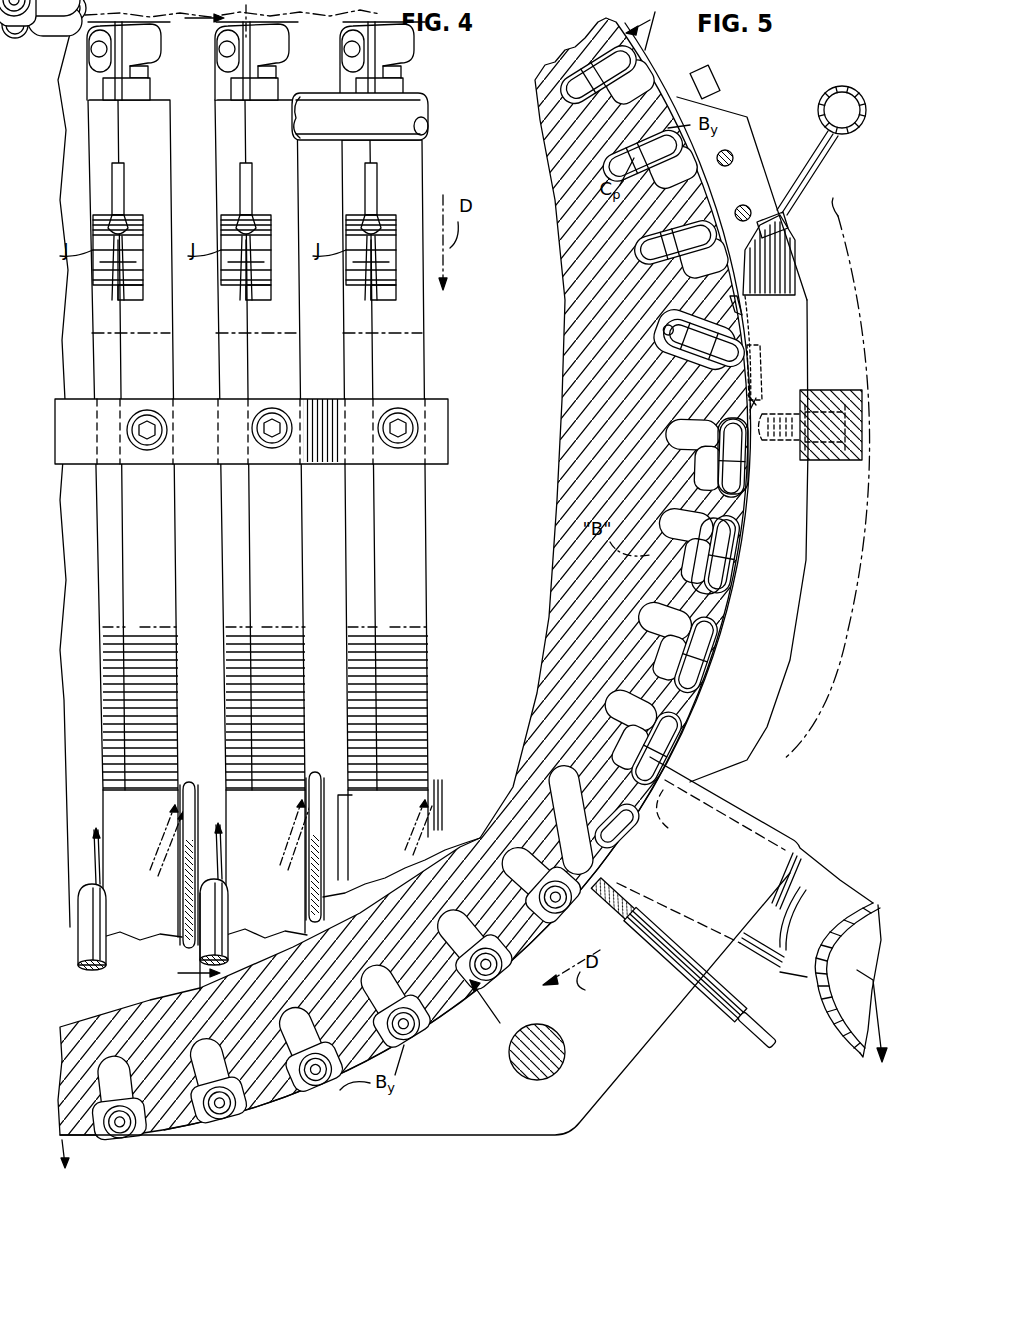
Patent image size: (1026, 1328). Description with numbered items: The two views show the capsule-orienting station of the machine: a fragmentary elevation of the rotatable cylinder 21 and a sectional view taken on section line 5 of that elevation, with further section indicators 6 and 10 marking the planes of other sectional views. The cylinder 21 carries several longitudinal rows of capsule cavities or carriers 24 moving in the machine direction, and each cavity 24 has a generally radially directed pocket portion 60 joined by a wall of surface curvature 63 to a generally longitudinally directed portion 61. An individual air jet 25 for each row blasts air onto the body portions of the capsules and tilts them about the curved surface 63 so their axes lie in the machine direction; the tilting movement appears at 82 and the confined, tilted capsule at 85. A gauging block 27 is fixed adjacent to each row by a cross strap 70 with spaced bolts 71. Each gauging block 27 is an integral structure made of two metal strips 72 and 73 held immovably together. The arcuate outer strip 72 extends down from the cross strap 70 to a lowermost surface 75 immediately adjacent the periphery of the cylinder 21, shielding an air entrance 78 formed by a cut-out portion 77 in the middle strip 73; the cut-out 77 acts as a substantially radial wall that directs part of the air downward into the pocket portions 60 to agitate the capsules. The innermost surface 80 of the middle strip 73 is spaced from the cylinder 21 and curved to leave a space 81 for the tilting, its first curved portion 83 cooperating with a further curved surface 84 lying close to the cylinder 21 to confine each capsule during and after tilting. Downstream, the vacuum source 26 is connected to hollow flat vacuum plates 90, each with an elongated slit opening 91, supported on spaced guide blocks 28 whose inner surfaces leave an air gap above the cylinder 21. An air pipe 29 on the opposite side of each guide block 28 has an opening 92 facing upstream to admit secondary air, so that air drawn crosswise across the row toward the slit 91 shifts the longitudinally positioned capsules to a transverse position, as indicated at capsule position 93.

In FIG. 4, the section line 5— 5 is at (212, 497).
In FIG. 5, the section line 6- 6 is at (565, 518).
In FIG. 4, the tube / section line 10 is at (300, 90).
In FIG. 4, the rotatable cylinder 21 is at (66, 118).
In FIG. 5, the rotatable cylinder 21 is at (575, 283).
In FIG. 4, the capsule cavity 24 is at (84, 40).
In FIG. 4, the air jet 25 is at (122, 200).
In FIG. 5, the air jet 25 is at (812, 193).
In FIG. 5, the vacuum source 26 is at (810, 868).
In FIG. 4, the gauging block 27 is at (124, 333).
In FIG. 5, the gauging block 27 is at (862, 528).
In FIG. 4, the guide block 28 is at (119, 845).
In FIG. 5, the guide block 28 is at (594, 1055).
In FIG. 4, the air pipe 29 is at (210, 912).
In FIG. 5, the air pipe 29 is at (672, 982).
In FIG. 5, the pocket portion 60 is at (700, 448).
In FIG. 5, the longitudinally directed portion 61 is at (722, 480).
In FIG. 5, the curved surface 63 is at (725, 420).
In FIG. 4, the cross strap 70 is at (438, 404).
In FIG. 5, the cross strap 70 is at (832, 394).
In FIG. 4, the bolts 71 is at (152, 432).
In FIG. 5, the bolts 71 is at (802, 427).
In FIG. 4, the gauging block strip 72 is at (136, 510).
In FIG. 4, the gauging block strip 73 is at (98, 510).
In FIG. 5, the lowermost surface 75 is at (725, 211).
In FIG. 5, the cut-out portion 77 is at (795, 283).
In FIG. 5, the air entrance 78 is at (785, 250).
In FIG. 5, the innermost surface 80 is at (755, 330).
In FIG. 5, the space 81 is at (730, 300).
In FIG. 5, the tilting movement 82 is at (655, 341).
In FIG. 5, the first curved portion 83 is at (764, 363).
In FIG. 5, the further curved surface 84 is at (753, 408).
In FIG. 5, the confined capsule position 85 is at (692, 438).
In FIG. 4, the vacuum plate 90 is at (182, 874).
In FIG. 5, the slit opening 91 is at (670, 829).
In FIG. 5, the opening 92 is at (592, 860).
In FIG. 5, the capsule position 93 is at (575, 780).